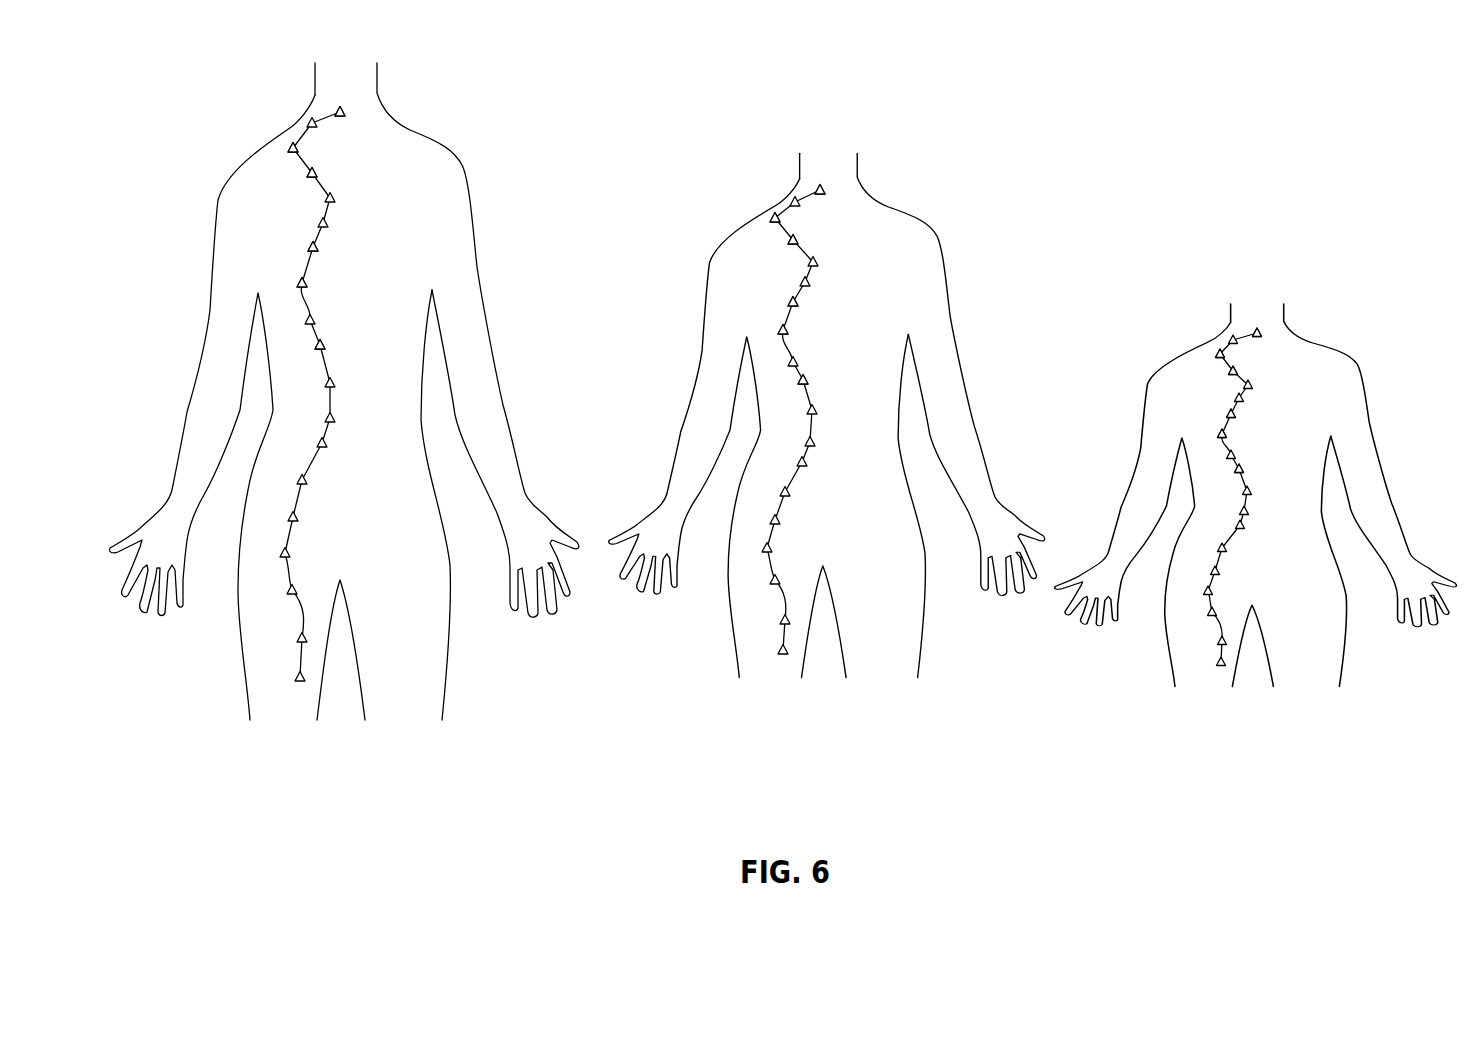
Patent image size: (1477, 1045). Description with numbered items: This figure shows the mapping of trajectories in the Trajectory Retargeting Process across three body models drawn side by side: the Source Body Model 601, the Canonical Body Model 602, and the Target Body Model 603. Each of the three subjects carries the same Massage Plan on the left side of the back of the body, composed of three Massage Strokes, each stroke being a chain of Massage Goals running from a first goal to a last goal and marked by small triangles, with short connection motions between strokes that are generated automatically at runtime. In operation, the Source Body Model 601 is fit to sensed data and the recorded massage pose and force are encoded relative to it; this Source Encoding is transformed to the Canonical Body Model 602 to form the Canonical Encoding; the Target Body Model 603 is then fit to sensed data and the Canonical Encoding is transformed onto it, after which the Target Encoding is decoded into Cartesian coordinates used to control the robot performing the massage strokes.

The Source Body Model 601 is at (368, 764).
The Canonical Body Model 602 is at (847, 724).
The Target Body Model 603 is at (1278, 730).